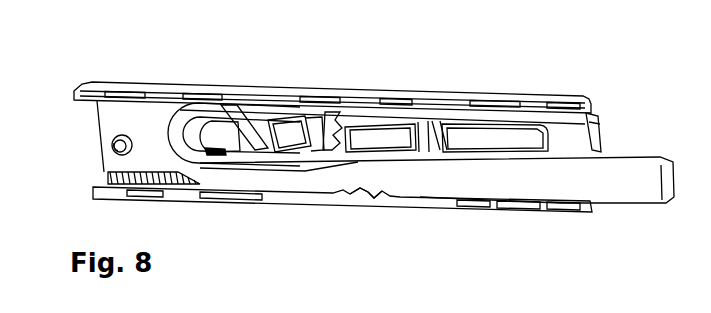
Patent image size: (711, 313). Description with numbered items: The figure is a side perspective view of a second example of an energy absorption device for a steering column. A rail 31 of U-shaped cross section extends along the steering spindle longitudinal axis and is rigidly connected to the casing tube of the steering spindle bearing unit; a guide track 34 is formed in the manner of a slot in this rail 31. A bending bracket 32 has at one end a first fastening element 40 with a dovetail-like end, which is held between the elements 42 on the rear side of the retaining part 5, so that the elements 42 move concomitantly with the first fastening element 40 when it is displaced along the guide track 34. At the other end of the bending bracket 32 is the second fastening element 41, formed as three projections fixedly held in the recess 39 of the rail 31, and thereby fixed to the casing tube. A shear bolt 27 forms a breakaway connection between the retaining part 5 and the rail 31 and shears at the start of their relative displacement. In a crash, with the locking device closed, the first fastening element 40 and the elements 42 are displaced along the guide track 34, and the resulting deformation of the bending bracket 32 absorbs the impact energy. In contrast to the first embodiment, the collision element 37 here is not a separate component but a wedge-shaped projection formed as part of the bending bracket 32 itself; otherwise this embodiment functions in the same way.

The retaining part 5 is at (345, 127).
The shear bolt 27 is at (111, 147).
The rail 31 is at (445, 97).
The bending bracket 32 is at (282, 178).
The guide track 34 is at (385, 137).
The collision element 37 is at (407, 173).
The recess 39 is at (358, 206).
The first fastening element 40 is at (243, 132).
The second fastening element 41 is at (372, 208).
The elements 42 is at (222, 137).